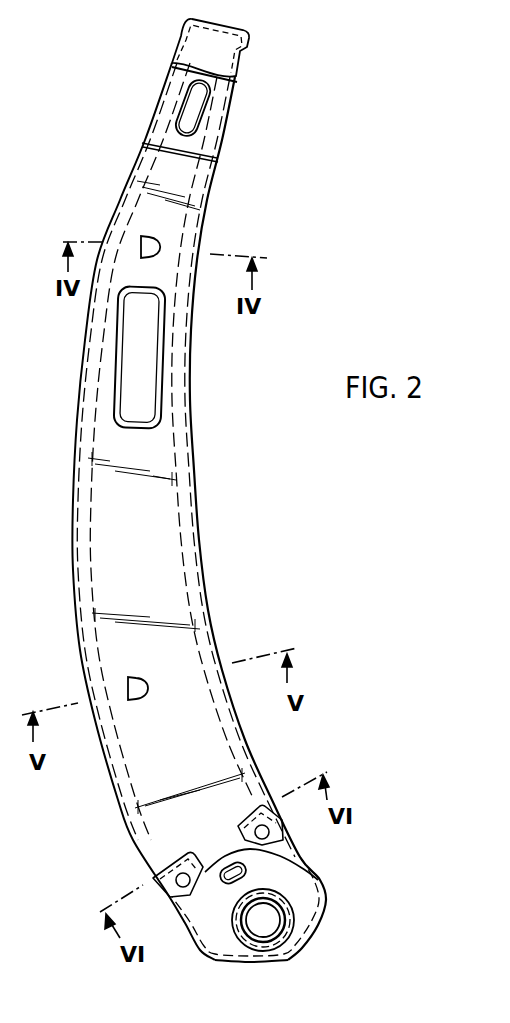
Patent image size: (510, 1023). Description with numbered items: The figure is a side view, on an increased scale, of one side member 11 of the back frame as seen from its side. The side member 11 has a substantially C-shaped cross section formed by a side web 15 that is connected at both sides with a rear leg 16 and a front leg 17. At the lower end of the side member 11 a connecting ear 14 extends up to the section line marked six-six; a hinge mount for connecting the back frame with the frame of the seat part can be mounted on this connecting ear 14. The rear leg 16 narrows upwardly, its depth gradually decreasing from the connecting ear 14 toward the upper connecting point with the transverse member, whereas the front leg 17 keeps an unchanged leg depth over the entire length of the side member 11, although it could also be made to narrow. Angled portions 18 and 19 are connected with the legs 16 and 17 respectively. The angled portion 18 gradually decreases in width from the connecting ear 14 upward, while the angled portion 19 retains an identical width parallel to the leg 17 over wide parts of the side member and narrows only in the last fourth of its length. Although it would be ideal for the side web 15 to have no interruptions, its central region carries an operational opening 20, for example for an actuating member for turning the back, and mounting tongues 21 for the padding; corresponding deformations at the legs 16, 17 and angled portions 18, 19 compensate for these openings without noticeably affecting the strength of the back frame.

The side member 11 is at (70, 540).
The connecting ear 14 is at (300, 877).
The side web 15 is at (110, 487).
The rear leg 16 is at (195, 515).
The front leg 17 is at (82, 428).
The angled portion 18 is at (192, 575).
The angled portion 19 is at (86, 402).
The operational opening 20 is at (147, 368).
The mounting tongue 21 is at (139, 244).